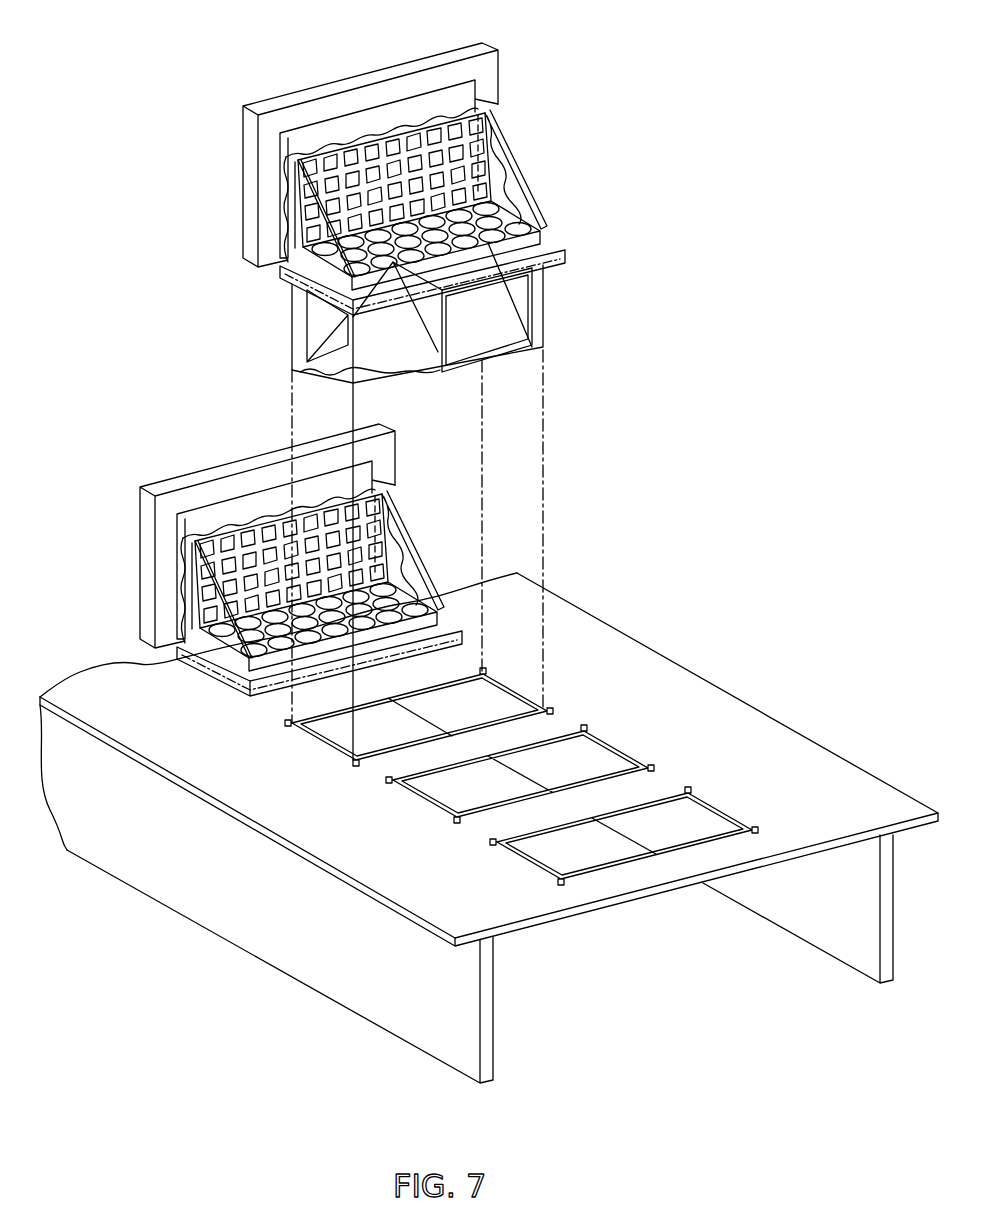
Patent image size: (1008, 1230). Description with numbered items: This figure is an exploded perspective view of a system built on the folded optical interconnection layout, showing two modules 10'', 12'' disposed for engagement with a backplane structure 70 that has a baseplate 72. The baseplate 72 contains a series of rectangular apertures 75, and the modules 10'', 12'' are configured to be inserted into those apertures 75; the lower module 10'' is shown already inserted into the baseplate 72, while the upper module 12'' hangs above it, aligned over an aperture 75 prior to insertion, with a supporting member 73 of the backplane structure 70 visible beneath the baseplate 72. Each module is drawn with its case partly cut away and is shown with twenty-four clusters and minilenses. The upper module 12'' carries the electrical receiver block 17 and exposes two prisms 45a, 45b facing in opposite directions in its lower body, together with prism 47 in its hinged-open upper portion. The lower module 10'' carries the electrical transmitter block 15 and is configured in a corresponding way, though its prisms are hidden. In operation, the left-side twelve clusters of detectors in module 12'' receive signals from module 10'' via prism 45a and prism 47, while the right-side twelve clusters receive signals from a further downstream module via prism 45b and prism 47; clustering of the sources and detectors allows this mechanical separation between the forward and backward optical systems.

The second module 12'' is at (424, 235).
The first module 10'' is at (287, 533).
The electrical receiver block 17 is at (316, 92).
The electrical transmitter block 15 is at (267, 534).
The prism 47 is at (530, 160).
The prism 45a is at (413, 328).
The prism 45b is at (448, 328).
The backplane structure 70 is at (489, 828).
The baseplate 72 is at (795, 770).
The table leg 73 is at (497, 1038).
The apertures 75 is at (557, 770).